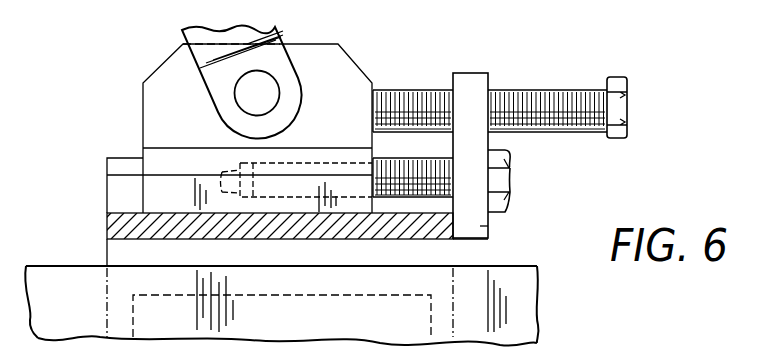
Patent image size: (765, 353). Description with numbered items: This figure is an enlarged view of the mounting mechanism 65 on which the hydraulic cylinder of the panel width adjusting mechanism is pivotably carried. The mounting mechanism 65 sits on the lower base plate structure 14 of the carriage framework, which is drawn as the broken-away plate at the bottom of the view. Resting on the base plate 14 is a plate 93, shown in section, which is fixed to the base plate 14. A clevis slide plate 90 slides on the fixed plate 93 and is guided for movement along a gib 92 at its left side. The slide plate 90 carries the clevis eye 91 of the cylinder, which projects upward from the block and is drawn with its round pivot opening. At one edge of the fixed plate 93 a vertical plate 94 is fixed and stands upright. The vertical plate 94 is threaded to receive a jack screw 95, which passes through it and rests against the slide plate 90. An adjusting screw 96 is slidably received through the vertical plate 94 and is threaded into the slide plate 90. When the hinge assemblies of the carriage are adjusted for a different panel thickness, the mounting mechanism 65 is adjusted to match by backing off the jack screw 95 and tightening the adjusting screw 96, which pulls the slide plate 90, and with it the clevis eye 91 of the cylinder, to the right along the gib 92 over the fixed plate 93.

The base plate structure 14 is at (72, 277).
The mounting mechanism 65 is at (542, 205).
The clevis slide plate 90 is at (171, 114).
The clevis eye 91 is at (198, 40).
The gib 92 is at (115, 165).
The plate 93 is at (118, 227).
The vertical plate 94 is at (490, 228).
The jack screw 95 is at (526, 94).
The adjusting screw 96 is at (500, 178).